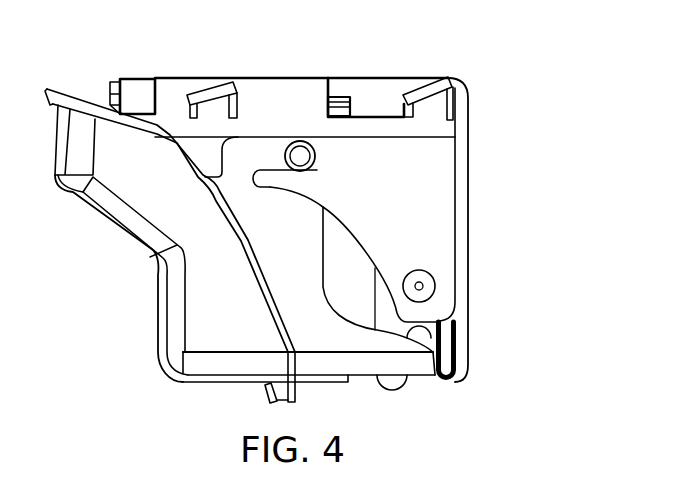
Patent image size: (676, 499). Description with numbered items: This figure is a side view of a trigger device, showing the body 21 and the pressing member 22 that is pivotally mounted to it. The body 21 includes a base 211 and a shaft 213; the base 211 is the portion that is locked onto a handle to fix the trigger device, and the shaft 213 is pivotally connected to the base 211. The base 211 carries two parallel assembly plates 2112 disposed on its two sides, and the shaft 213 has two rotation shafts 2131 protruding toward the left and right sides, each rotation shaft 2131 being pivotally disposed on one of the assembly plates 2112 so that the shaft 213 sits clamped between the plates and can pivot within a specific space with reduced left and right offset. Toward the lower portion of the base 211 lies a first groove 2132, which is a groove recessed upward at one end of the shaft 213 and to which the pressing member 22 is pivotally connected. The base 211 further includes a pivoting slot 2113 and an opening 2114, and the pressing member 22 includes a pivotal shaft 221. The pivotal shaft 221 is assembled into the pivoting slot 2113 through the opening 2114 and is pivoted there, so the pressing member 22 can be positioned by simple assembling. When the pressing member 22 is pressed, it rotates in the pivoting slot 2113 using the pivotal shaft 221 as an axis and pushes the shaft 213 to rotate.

The body 21 is at (536, 120).
The base 211 is at (436, 131).
The shaft 213 is at (462, 181).
The assembly plate 2112 is at (436, 243).
The rotation shaft 2131 is at (434, 284).
The first groove 2132 is at (443, 330).
The pivoting slot 2113 is at (273, 163).
The opening 2114 is at (237, 172).
The pressing member 22 is at (98, 102).
The pivotal shaft 221 is at (303, 150).